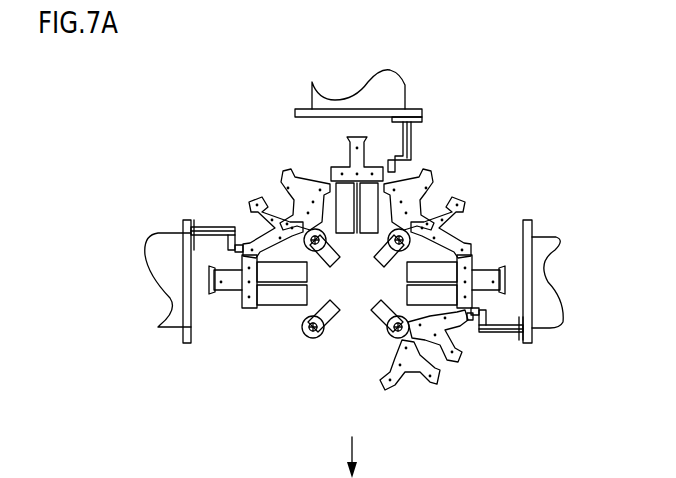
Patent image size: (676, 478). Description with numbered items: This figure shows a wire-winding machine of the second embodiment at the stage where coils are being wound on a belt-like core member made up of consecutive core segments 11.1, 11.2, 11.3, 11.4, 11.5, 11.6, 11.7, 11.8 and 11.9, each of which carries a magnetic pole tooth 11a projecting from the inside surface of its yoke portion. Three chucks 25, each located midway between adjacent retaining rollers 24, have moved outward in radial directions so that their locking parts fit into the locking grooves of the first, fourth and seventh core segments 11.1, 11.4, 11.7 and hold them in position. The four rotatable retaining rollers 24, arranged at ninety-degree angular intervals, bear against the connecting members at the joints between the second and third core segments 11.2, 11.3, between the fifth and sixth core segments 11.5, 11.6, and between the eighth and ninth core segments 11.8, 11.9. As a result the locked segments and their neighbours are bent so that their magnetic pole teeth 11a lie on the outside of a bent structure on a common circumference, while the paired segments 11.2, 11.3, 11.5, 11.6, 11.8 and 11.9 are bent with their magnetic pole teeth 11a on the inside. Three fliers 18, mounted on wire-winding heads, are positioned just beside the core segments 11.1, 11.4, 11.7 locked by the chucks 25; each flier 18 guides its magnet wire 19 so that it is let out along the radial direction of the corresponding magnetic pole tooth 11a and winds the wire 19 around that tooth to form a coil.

The first core segment 11.1 is at (253, 307).
The second core segment 11.2 is at (260, 208).
The third core segment 11.3 is at (277, 183).
The fourth core segment 11.4 is at (357, 134).
The fifth core segment 11.5 is at (433, 177).
The sixth core segment 11.6 is at (453, 207).
The seventh core segment 11.7 is at (505, 278).
The eighth core segment 11.8 is at (460, 365).
The ninth core segment 11.9 is at (430, 388).
The magnetic pole tooth 11a is at (227, 292).
The flier 18 is at (212, 228).
The magnet wire 19 is at (240, 253).
The retaining roller 24 is at (388, 340).
The chuck 25 is at (283, 297).